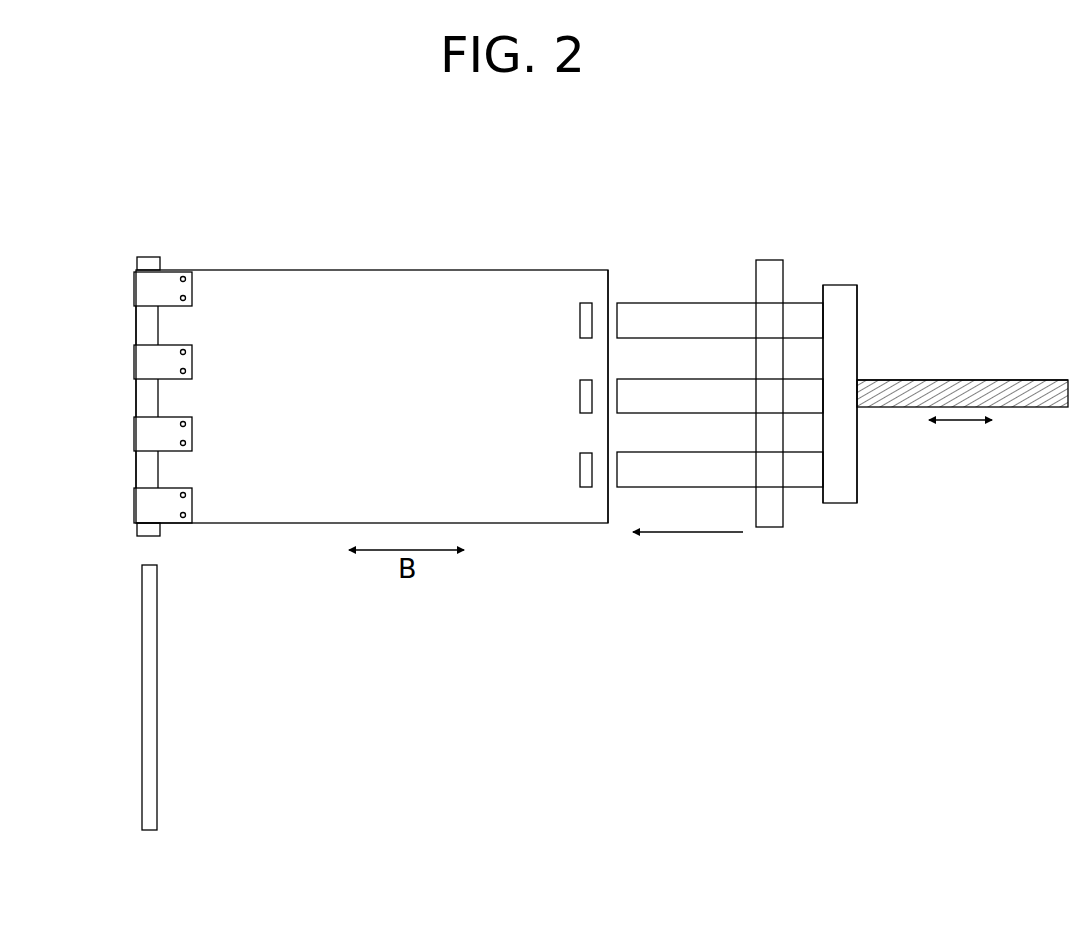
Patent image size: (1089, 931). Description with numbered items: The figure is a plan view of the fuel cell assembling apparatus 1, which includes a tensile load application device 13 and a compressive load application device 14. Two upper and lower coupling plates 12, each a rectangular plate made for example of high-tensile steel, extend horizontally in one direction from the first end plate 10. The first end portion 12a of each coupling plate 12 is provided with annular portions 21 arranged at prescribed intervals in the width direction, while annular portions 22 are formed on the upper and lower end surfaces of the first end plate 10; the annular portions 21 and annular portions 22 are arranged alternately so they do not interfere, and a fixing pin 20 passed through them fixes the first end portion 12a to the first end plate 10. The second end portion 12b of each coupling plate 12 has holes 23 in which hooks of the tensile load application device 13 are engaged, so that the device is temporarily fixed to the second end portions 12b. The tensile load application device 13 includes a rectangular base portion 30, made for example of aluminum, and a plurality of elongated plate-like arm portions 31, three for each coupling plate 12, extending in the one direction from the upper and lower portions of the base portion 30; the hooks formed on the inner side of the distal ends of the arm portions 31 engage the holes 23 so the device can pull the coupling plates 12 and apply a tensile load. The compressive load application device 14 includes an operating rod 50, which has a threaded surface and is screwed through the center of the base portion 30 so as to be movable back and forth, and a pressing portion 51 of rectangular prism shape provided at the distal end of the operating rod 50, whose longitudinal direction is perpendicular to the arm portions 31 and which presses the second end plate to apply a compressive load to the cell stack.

The fuel cell assembling apparatus 1 is at (820, 235).
The first end plate 10 is at (155, 540).
The coupling plate 12 is at (362, 270).
The first end portion 12a is at (152, 263).
The second end portion 12b is at (610, 268).
The tensile load application device 13 is at (858, 272).
The compressive load application device 14 is at (952, 374).
The fixing pin 20 is at (158, 723).
The annular portions 21 is at (150, 287).
The annular portions 22 is at (148, 266).
The holes 23 is at (578, 322).
The base portion 30 is at (858, 463).
The arm portions 31 is at (678, 472).
The operating rod 50 is at (1030, 380).
The pressing portion 51 is at (771, 529).